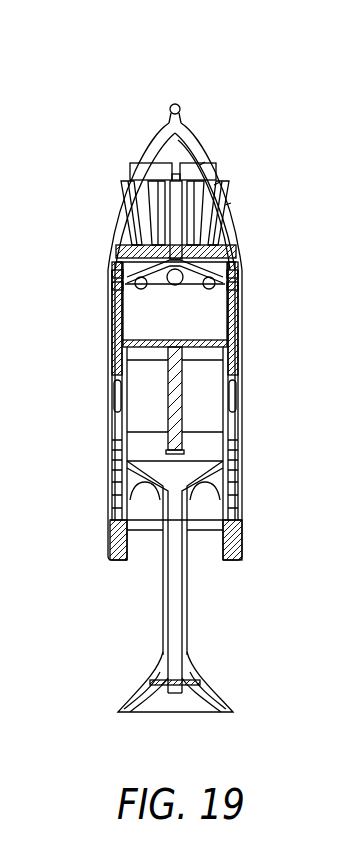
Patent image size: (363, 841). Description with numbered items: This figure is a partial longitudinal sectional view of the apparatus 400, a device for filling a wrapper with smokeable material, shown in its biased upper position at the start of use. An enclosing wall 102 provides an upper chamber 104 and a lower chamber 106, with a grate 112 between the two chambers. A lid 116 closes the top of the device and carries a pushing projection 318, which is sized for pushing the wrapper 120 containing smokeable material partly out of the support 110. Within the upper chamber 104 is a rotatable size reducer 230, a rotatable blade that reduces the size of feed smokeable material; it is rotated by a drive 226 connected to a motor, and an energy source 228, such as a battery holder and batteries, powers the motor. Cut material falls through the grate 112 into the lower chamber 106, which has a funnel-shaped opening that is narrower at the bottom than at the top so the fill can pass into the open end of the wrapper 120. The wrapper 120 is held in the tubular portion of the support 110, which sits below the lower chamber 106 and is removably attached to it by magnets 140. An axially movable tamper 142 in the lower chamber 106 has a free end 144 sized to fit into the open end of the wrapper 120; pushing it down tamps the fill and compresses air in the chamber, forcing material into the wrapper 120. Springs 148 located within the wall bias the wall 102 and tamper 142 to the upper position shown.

The apparatus 400 is at (101, 99).
The pushing projection 318 is at (176, 103).
The lid 116 is at (150, 143).
The wall 102 is at (108, 358).
The energy source 228 is at (160, 203).
The drive 226 is at (116, 249).
The rotatable size reducer 230 is at (236, 261).
The grate 112 is at (113, 291).
The upper chamber 104 is at (206, 320).
The lower chamber 106 is at (206, 378).
The tamper 142 is at (184, 400).
The free end 144 is at (222, 442).
The spring 148 is at (118, 460).
The magnet 140 is at (120, 498).
The wrapper 120 is at (183, 604).
The support 110 is at (194, 673).